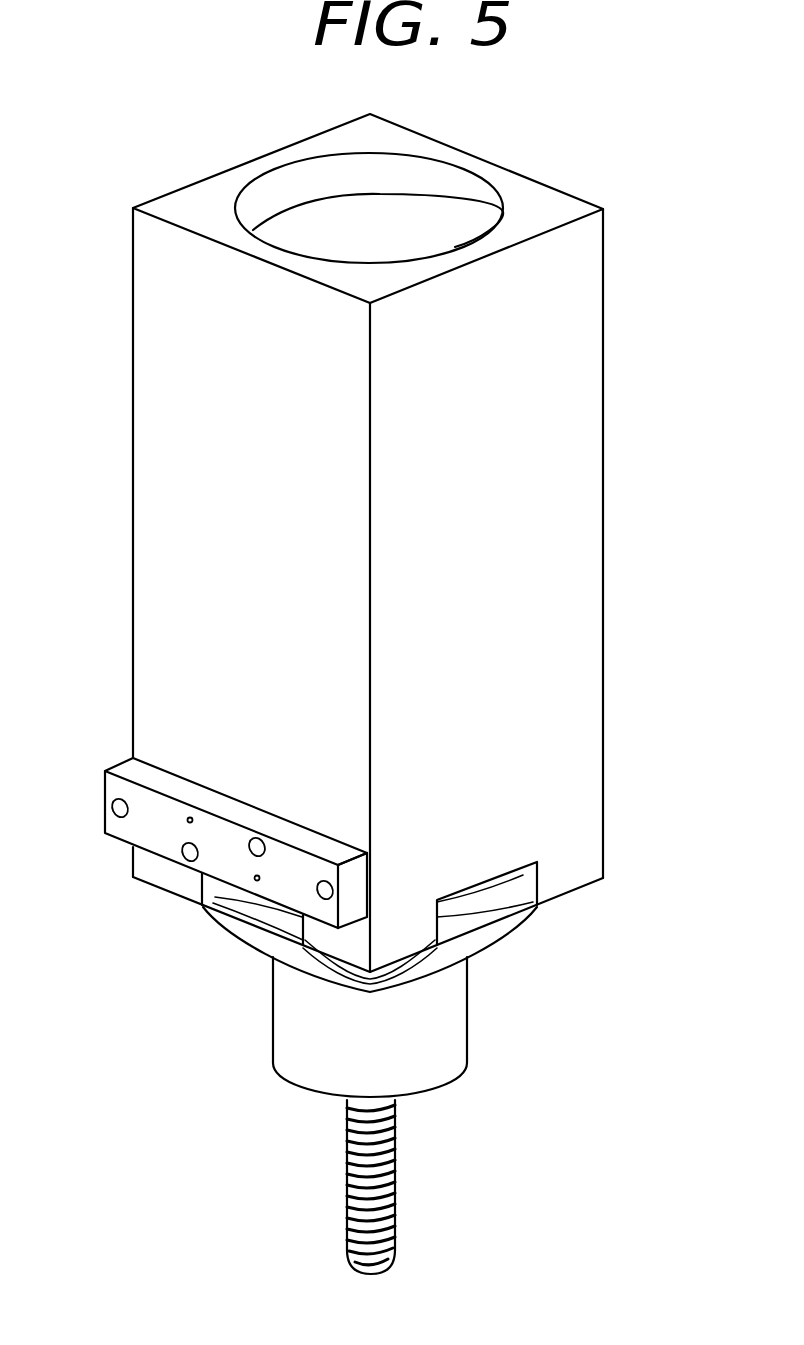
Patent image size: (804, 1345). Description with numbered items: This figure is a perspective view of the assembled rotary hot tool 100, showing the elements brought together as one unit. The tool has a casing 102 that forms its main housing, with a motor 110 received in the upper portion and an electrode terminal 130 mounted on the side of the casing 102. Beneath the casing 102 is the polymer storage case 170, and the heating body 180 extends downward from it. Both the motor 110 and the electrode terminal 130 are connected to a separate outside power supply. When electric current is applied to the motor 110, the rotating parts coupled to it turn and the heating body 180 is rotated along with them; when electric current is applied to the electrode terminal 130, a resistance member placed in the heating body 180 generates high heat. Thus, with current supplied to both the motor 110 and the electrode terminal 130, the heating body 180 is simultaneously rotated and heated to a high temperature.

The rotary hot tool 100 is at (137, 145).
The casing 102 is at (535, 648).
The motor 110 is at (400, 224).
The electrode terminal 130 is at (283, 883).
The polymer storage case 170 is at (445, 1028).
The heating body 180 is at (395, 1177).